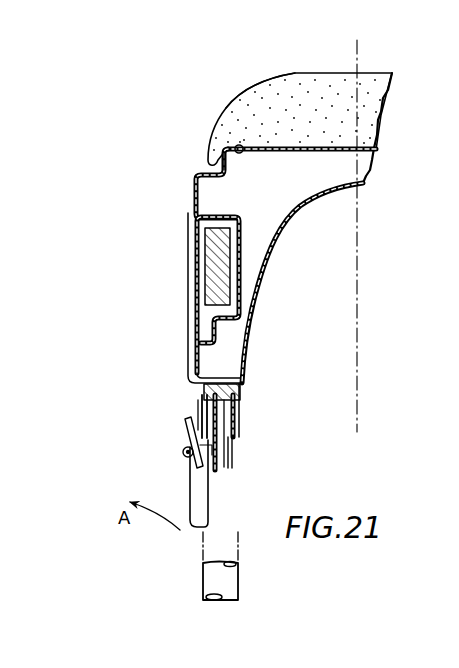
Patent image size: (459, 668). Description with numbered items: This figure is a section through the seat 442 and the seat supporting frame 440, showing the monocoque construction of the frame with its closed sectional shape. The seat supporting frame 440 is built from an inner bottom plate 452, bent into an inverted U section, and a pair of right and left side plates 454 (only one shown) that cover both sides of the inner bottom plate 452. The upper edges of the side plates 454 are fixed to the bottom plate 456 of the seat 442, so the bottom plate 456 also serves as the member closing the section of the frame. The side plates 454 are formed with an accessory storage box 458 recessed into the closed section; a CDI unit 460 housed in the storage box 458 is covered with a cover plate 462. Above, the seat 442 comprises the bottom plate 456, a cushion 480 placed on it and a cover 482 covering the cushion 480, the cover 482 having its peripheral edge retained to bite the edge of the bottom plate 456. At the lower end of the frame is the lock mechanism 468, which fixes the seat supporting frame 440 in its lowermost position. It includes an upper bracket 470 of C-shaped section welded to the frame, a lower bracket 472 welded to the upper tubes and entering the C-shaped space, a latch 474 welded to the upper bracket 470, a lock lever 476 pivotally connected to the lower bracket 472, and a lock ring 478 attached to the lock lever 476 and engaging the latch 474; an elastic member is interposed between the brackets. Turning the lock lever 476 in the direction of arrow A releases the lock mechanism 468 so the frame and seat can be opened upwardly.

The seat supporting frame 440 is at (172, 166).
The seat 442 is at (190, 124).
The inner bottom plate 452 is at (290, 216).
The side plate 454 is at (192, 199).
The bottom plate 456 is at (293, 152).
The accessory storage box 458 is at (234, 218).
The battery block 460 is at (208, 275).
The cover plate 462 is at (195, 247).
The lock mechanism 468 is at (152, 456).
The upper bracket 470 is at (242, 391).
The lower bracket 472 is at (234, 462).
The latch 474 is at (204, 406).
The lock lever 476 is at (193, 504).
The lock ring 478 is at (185, 437).
The cushion 480 is at (321, 80).
The cover 482 is at (297, 73).